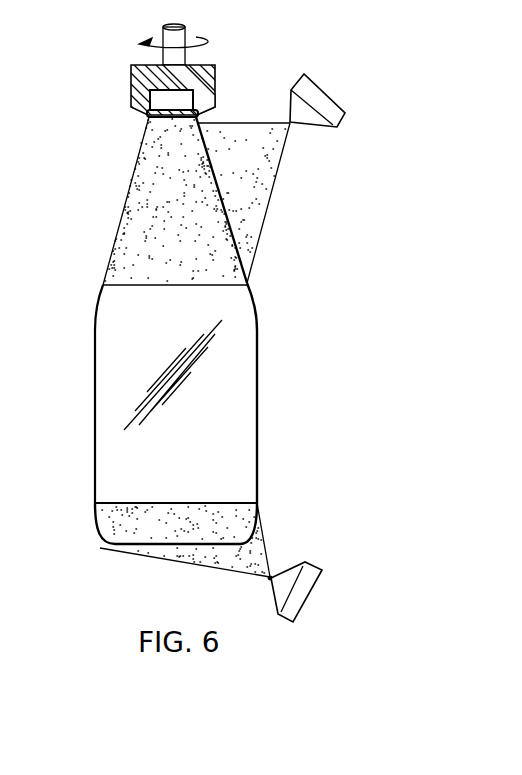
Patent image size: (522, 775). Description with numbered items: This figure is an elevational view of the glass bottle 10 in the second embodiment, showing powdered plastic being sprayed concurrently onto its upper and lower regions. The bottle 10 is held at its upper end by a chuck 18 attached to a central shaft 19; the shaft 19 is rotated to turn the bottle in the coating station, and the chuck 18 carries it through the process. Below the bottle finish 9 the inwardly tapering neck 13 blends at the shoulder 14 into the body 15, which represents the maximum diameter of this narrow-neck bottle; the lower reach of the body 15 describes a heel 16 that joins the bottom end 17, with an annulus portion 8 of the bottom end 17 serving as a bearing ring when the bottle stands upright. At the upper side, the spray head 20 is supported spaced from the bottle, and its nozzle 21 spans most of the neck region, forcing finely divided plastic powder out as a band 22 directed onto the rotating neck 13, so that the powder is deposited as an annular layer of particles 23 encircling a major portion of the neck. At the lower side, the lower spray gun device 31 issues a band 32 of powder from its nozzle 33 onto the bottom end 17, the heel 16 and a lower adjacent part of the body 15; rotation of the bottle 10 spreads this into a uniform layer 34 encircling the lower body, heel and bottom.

The annulus portion 8 is at (8, 53).
The bottle finish 9 is at (150, 96).
The glass bottle 10 is at (182, 457).
The neck 13 is at (97, 305).
The shoulder 14 is at (258, 378).
The body 15 is at (95, 403).
The heel 16 is at (97, 527).
The bottom end 17 is at (150, 547).
The chuck 18 is at (228, 82).
The central shaft 19 is at (186, 30).
The spray head 20 is at (333, 108).
The nozzle 21 is at (293, 125).
The band of powdered plastic 22 is at (263, 212).
The layer of particles 23 is at (133, 242).
The lower spray gun device 31 is at (273, 627).
The band of powder spray 32 is at (262, 552).
The nozzle 33 is at (270, 580).
The layer of plastic powder 34 is at (235, 518).